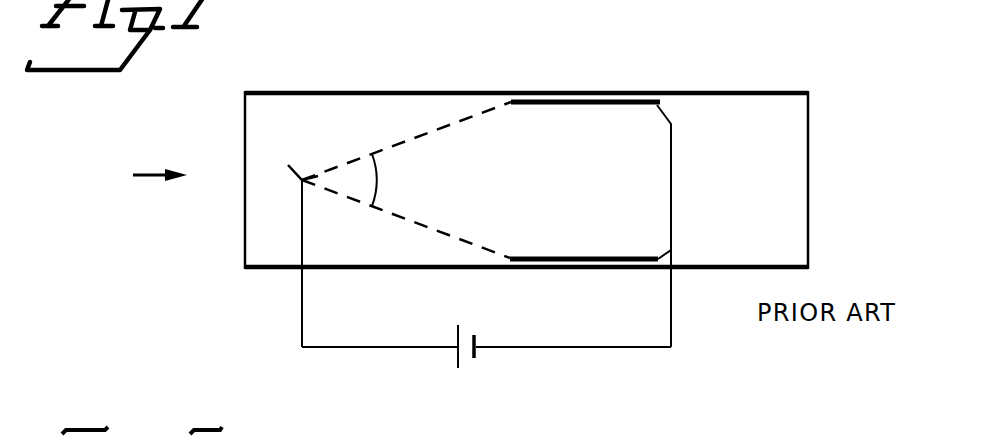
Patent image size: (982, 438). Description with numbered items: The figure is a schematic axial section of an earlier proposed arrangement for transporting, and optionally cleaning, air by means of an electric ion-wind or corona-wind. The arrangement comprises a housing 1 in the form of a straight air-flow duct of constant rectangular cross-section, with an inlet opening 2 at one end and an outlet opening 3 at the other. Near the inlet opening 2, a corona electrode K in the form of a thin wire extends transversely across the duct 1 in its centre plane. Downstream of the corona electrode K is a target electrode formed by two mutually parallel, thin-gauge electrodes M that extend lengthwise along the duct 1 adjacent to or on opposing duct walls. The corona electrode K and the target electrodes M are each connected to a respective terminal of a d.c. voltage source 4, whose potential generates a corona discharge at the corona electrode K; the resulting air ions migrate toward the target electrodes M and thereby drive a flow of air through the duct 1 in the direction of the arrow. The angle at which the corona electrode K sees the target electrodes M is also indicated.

The housing 1 is at (416, 92).
The inlet opening 2 is at (252, 130).
The outlet opening 3 is at (797, 151).
The d.c. voltage source 4 is at (473, 332).
The target electrodes M is at (556, 100).
The corona electrode K is at (395, 224).